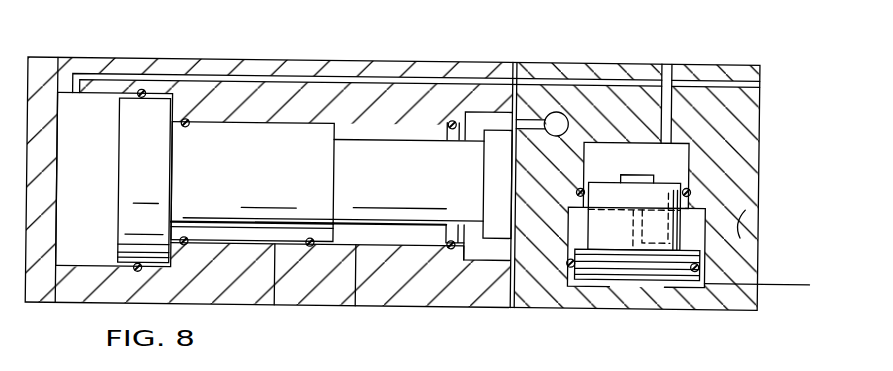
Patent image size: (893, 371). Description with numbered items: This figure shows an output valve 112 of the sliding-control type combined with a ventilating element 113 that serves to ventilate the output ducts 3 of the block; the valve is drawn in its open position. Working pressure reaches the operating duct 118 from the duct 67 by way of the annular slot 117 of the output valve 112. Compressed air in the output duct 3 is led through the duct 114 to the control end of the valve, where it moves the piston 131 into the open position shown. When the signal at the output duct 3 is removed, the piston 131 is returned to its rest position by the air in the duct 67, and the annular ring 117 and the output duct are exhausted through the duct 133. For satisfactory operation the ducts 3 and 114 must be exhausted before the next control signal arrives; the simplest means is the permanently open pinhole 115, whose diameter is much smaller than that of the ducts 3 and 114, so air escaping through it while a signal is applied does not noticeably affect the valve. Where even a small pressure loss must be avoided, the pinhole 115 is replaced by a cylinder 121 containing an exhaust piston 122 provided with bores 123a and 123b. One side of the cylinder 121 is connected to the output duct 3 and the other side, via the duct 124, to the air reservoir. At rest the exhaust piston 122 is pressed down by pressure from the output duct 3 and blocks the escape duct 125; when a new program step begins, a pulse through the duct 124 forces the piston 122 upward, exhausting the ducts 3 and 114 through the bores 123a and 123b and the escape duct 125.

The output duct 3 is at (668, 58).
The duct 67 is at (547, 106).
The output valve 112 is at (343, 54).
The ventilating element 113 is at (749, 94).
The duct 114 is at (113, 71).
The pinhole 115 is at (723, 72).
The annular slot 117 is at (370, 124).
The operating duct 118 is at (360, 288).
The cylinder 121 is at (700, 232).
The exhaust piston 122 is at (674, 221).
The bore 123a is at (605, 207).
The bore 123b is at (638, 208).
The duct 124 is at (740, 277).
The escape duct 125 is at (747, 202).
The piston 131 is at (202, 146).
The duct 133 is at (273, 284).